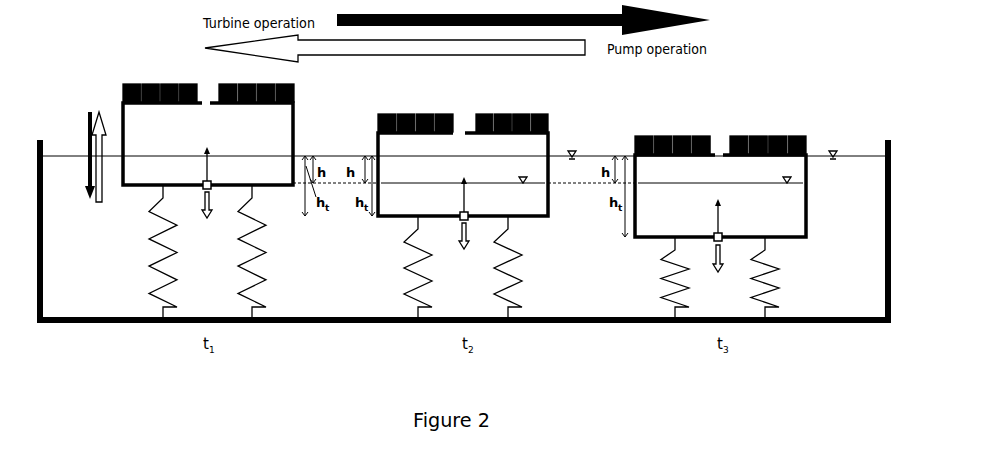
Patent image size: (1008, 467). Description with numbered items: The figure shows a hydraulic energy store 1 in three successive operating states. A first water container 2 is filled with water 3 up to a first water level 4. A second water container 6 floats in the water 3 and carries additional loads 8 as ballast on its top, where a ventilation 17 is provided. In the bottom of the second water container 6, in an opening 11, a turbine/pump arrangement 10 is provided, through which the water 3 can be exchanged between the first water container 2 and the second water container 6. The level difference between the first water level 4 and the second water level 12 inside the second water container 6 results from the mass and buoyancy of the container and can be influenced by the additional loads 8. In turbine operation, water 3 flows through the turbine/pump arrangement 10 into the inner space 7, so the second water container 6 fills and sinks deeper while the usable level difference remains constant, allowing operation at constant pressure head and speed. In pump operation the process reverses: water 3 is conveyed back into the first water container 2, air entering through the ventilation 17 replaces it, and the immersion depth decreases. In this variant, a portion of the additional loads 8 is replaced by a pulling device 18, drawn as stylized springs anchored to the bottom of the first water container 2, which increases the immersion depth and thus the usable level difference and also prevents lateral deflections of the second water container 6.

The pumped storage power plant 1 is at (73, 31).
The first water container 2 is at (293, 320).
The water 3 is at (464, 233).
The first water level 4 is at (578, 151).
The second water container 6 is at (123, 123).
The inner space 7 is at (268, 145).
The additional loads 8 is at (129, 83).
The turbine/pump arrangement 10 is at (203, 181).
The opening 11 is at (212, 181).
The second water level 12 is at (136, 183).
The ventilation 17 is at (205, 100).
The pulling device 18 is at (152, 258).